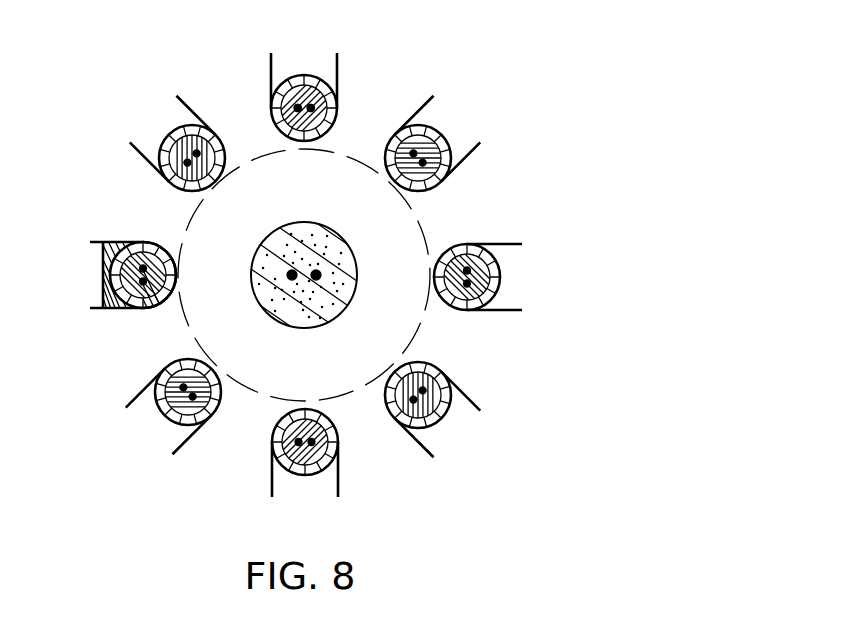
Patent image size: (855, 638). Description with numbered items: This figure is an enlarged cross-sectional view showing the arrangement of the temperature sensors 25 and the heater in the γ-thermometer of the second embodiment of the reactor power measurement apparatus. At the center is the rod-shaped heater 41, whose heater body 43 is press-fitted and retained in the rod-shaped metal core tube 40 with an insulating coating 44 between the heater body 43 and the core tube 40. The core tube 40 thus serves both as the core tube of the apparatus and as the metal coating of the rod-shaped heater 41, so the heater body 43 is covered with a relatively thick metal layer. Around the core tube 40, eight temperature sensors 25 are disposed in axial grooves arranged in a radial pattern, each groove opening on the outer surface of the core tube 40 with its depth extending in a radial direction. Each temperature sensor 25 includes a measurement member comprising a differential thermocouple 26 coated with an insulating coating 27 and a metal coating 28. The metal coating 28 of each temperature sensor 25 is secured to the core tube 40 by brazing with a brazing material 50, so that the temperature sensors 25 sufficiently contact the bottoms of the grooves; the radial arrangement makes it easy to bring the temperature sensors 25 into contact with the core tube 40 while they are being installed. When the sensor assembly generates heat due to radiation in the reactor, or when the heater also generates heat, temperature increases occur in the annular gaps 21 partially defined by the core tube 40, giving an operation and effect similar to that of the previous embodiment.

The annular gap 21 is at (307, 68).
The temperature sensor 25 is at (342, 248).
The differential thermocouple 26 is at (183, 126).
The insulating coating 27 is at (220, 137).
The metal coating 28 is at (358, 86).
The core tube 40 is at (455, 204).
The rod-shaped heater 41 is at (270, 378).
The heater body 43 is at (292, 281).
The insulating coating 44 is at (312, 320).
The brazing material 50 is at (103, 270).